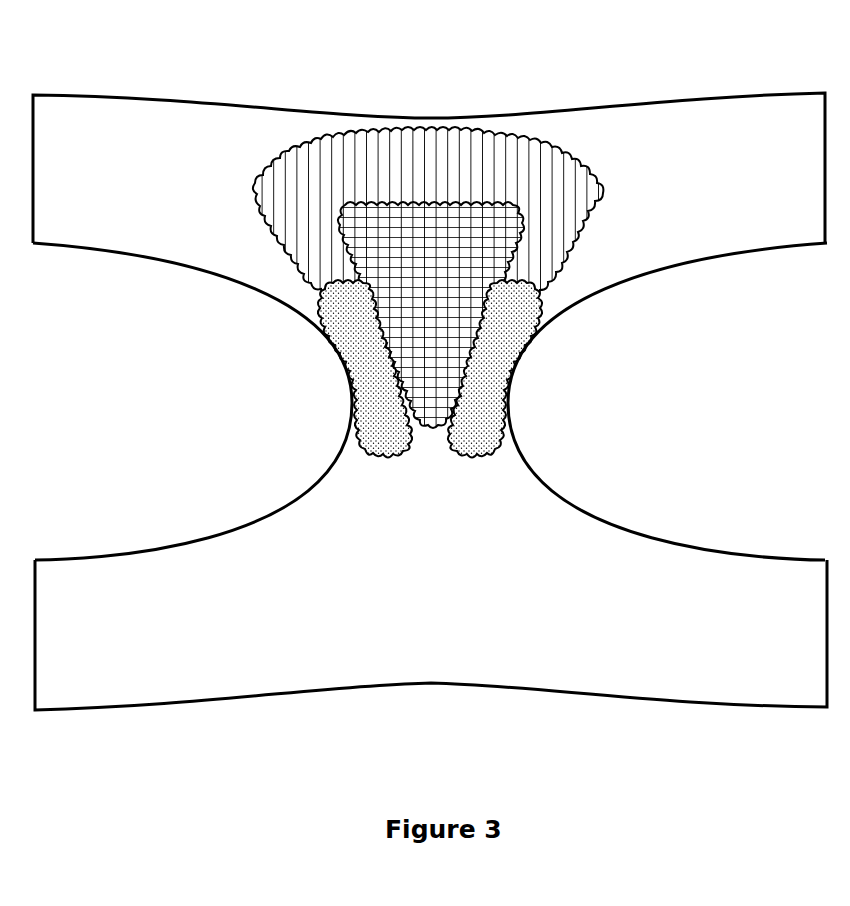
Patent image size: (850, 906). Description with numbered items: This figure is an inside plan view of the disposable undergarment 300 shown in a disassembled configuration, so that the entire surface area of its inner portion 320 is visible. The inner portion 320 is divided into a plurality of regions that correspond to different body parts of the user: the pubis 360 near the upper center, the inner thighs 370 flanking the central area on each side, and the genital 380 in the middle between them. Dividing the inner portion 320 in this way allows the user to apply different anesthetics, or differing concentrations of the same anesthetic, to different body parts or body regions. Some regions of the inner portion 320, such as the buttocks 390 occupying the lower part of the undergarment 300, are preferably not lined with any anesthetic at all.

The disposable undergarment 300 is at (430, 393).
The inner portion 320 is at (642, 122).
The pubis 360 is at (300, 202).
The inner thighs 370 is at (350, 370).
The genital 380 is at (480, 240).
The buttocks 390 is at (582, 643).